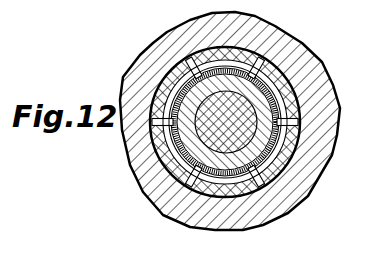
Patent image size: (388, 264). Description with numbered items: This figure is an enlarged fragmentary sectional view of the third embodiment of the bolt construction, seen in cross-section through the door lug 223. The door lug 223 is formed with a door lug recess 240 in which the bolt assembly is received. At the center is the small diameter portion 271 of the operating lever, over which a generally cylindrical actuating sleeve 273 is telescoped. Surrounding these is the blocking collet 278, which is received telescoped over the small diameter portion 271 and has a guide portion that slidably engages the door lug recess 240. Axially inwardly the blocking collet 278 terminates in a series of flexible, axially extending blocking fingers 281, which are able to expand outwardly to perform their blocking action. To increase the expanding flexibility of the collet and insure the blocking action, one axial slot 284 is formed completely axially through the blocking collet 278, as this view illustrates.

The door lug 223 is at (288, 52).
The door lug recess 240 is at (188, 62).
The small diameter portion 271 is at (210, 131).
The actuating sleeve 273 is at (172, 157).
The blocking collet 278 is at (293, 106).
The blocking fingers 281 is at (180, 88).
The axial slot 284 is at (303, 130).